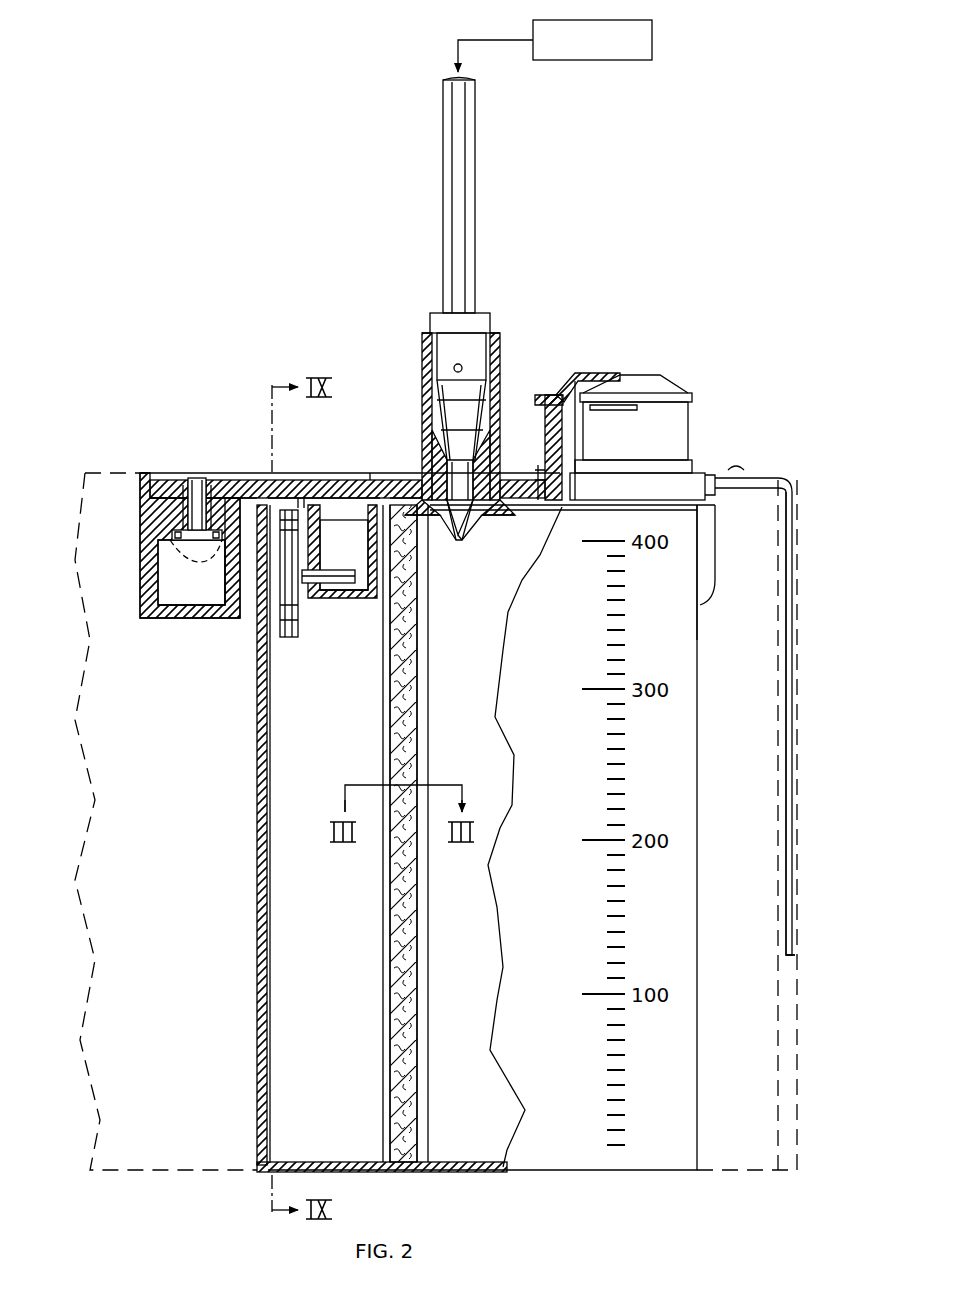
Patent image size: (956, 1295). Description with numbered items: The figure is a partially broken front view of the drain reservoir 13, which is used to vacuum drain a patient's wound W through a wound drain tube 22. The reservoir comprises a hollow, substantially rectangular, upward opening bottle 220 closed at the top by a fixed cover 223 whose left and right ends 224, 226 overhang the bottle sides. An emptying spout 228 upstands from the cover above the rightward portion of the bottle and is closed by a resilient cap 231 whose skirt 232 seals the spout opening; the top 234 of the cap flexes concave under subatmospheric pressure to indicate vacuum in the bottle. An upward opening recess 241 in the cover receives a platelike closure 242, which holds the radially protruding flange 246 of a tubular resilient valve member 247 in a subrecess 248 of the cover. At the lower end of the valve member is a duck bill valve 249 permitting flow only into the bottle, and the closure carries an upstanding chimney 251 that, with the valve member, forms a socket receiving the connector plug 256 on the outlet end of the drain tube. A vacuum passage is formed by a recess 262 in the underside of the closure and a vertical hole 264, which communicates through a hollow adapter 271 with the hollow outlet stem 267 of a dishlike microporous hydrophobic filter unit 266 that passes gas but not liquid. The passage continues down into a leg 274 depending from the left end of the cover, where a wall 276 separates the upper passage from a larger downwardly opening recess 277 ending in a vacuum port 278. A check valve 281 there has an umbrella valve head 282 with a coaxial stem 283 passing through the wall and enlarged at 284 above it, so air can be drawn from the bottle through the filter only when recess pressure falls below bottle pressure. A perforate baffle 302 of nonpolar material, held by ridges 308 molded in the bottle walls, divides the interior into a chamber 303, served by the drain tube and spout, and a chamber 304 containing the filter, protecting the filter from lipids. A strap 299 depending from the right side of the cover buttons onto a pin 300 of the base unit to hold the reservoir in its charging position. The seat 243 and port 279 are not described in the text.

The drain reservoir 13 is at (722, 1065).
The wound drain tube 22 is at (468, 120).
The bottle 220 is at (702, 672).
The cover 223 is at (182, 448).
The left end of cover 224 is at (140, 493).
The right end of cover 226 is at (748, 470).
The emptying spout 228 is at (686, 426).
The resilient cap 231 is at (656, 386).
The skirt 232 is at (552, 395).
The top of cap 234 is at (620, 374).
The upward opening recess 241 is at (376, 480).
The platelike closure 242 is at (243, 478).
The seat 243 is at (172, 535).
The radially protruding flange 246 is at (500, 503).
The tubular resilient valve member 247 is at (482, 513).
The subrecess 248 is at (447, 515).
The duck bill valve 249 is at (472, 520).
The chimney 251 is at (424, 345).
The connector plug 256 is at (483, 316).
The recess 262 is at (300, 505).
The vertical hole 264 is at (335, 515).
The microporous hydrophobic filter unit 266 is at (290, 640).
The hollow outlet stem 267 is at (310, 590).
The hollow adapter 271 is at (350, 600).
The leg 274 is at (142, 573).
The wall 276 is at (200, 535).
The downwardly opening recess 277 is at (165, 612).
The vacuum port 278 is at (226, 618).
The valve port 279 is at (545, 402).
The check valve 281 is at (180, 565).
The umbrella valve head 282 is at (192, 556).
The resilient coaxial stem 283 is at (191, 535).
The enlarged portion of stem 284 is at (186, 515).
The strap 299 is at (795, 950).
The pin 300 is at (795, 866).
The perforate baffle 302 is at (412, 952).
The chamber 303 is at (493, 1173).
The chamber 304 is at (262, 1079).
The ridges 308 is at (422, 700).
The wound W is at (640, 48).